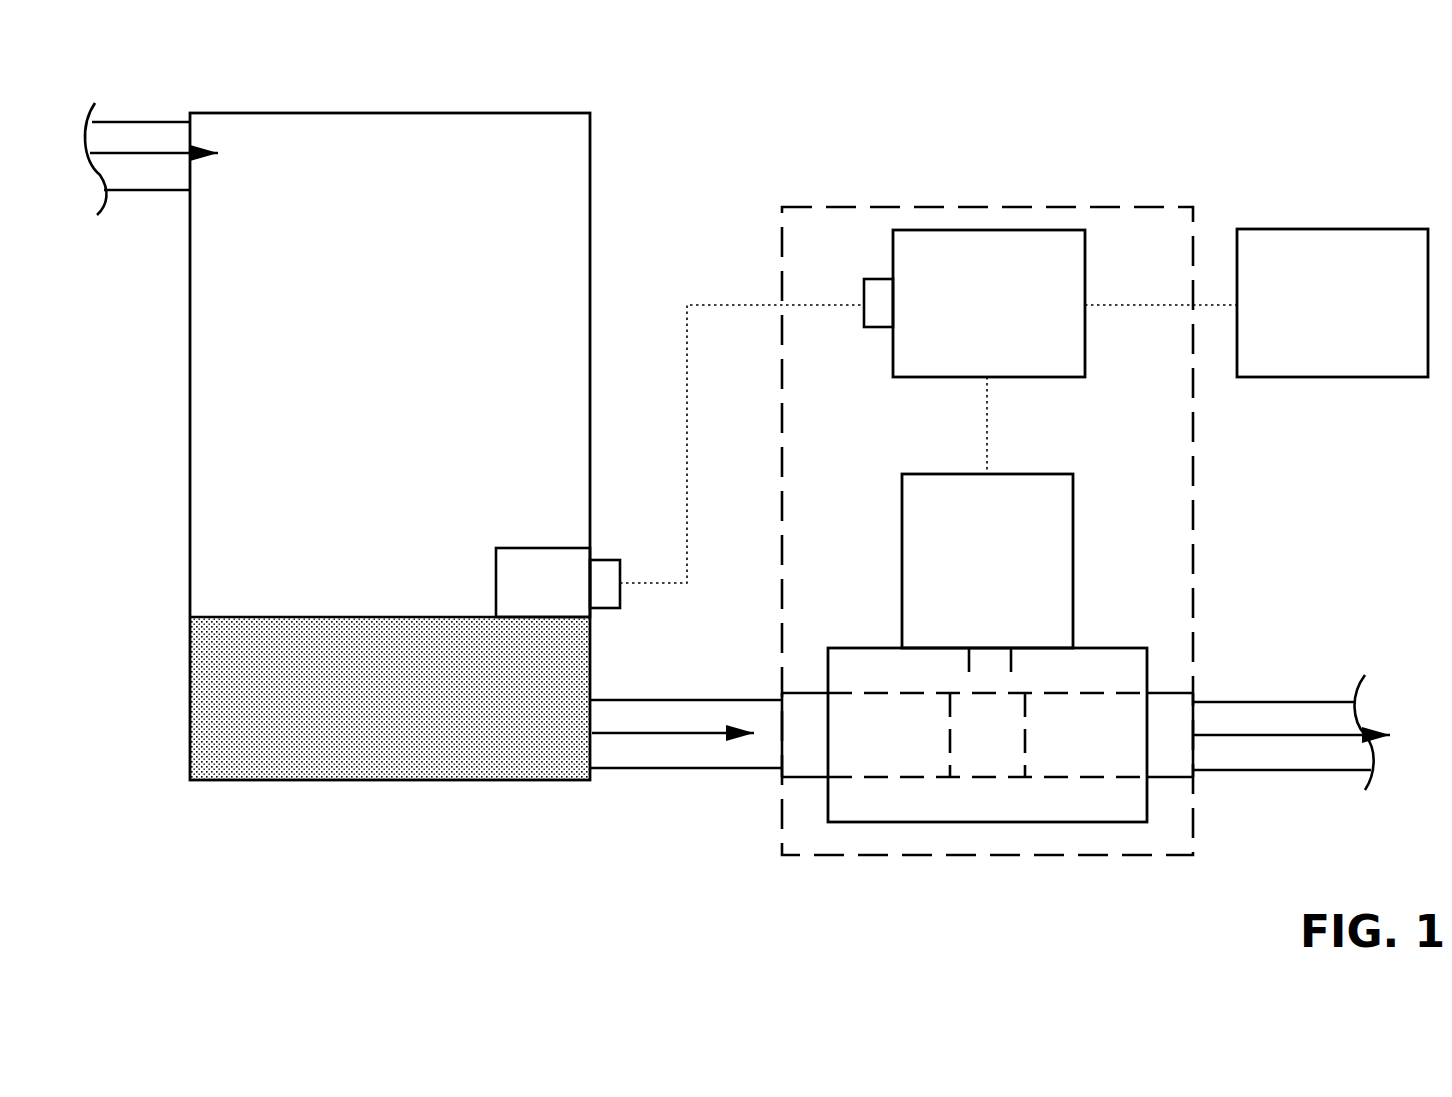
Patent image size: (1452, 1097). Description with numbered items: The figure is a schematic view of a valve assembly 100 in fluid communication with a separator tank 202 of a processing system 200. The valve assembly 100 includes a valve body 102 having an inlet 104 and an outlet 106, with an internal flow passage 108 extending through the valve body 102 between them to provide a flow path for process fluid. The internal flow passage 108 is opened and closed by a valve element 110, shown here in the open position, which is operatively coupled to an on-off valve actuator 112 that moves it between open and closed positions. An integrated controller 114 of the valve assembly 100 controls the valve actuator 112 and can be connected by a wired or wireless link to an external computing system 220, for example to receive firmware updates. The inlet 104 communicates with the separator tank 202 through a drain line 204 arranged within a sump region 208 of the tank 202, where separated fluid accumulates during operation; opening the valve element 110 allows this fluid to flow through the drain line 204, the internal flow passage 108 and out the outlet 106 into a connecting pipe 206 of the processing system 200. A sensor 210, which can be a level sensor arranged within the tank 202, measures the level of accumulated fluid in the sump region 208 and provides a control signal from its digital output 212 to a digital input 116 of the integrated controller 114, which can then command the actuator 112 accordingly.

The valve assembly 100 is at (1226, 195).
The valve body 102 is at (1118, 648).
The inlet 104 is at (802, 777).
The outlet 106 is at (1165, 693).
The internal flow passage 108 is at (903, 802).
The valve element 110 is at (950, 742).
The valve actuator 112 is at (987, 561).
The integrated controller 114 is at (989, 303).
The digital input 116 is at (875, 328).
The processing system 200 is at (1376, 130).
The separator tank 202 is at (390, 446).
The drain line 204 is at (690, 768).
The connecting pipe 206 is at (1315, 770).
The sump region 208 is at (276, 596).
The sensor 210 is at (543, 582).
The digital output 212 is at (603, 560).
The computing system 220 is at (1332, 303).